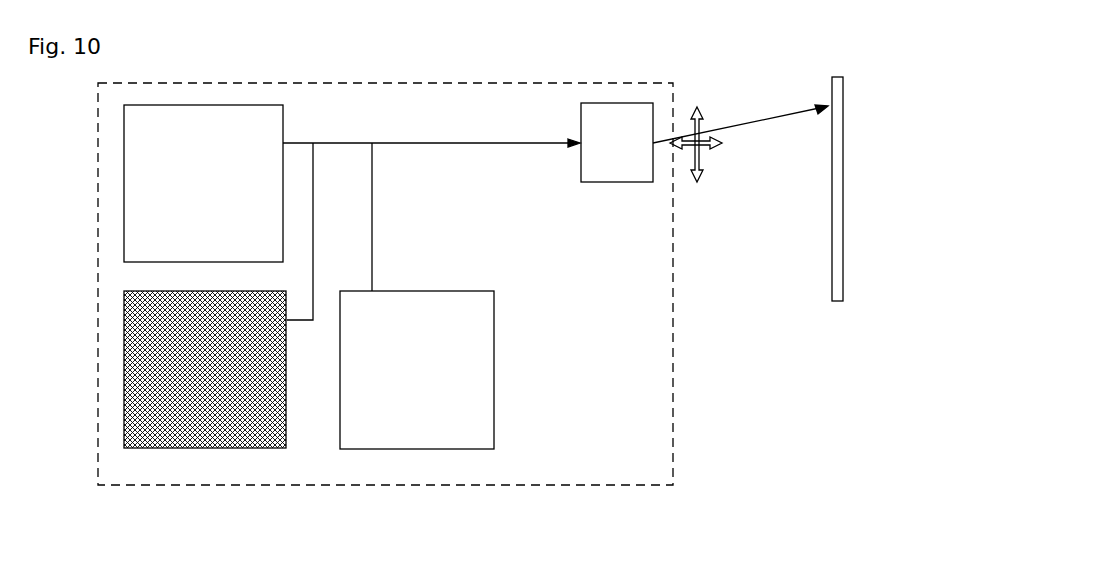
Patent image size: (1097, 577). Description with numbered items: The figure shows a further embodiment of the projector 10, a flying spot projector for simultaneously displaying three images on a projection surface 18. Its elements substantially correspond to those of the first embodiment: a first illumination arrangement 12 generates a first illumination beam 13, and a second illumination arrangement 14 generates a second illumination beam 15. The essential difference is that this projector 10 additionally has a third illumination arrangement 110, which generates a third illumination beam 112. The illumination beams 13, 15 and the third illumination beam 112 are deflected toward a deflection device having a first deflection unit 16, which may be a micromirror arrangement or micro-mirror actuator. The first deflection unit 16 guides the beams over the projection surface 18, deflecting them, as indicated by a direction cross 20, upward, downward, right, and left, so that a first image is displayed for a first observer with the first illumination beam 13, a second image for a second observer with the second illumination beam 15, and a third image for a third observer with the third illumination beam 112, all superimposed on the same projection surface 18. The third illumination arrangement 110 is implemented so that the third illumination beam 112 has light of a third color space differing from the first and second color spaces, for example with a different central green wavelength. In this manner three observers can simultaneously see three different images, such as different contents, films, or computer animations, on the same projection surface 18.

The projector 10 is at (387, 485).
The first illumination arrangement 12 is at (203, 105).
The first illumination beam 13 is at (300, 143).
The second illumination arrangement 14 is at (204, 448).
The second illumination beam 15 is at (291, 320).
The first deflection unit 16 is at (617, 103).
The projection surface 18 is at (843, 191).
The direction cross 20 is at (707, 148).
The third illumination arrangement 110 is at (447, 449).
The third illumination beam 112 is at (372, 196).